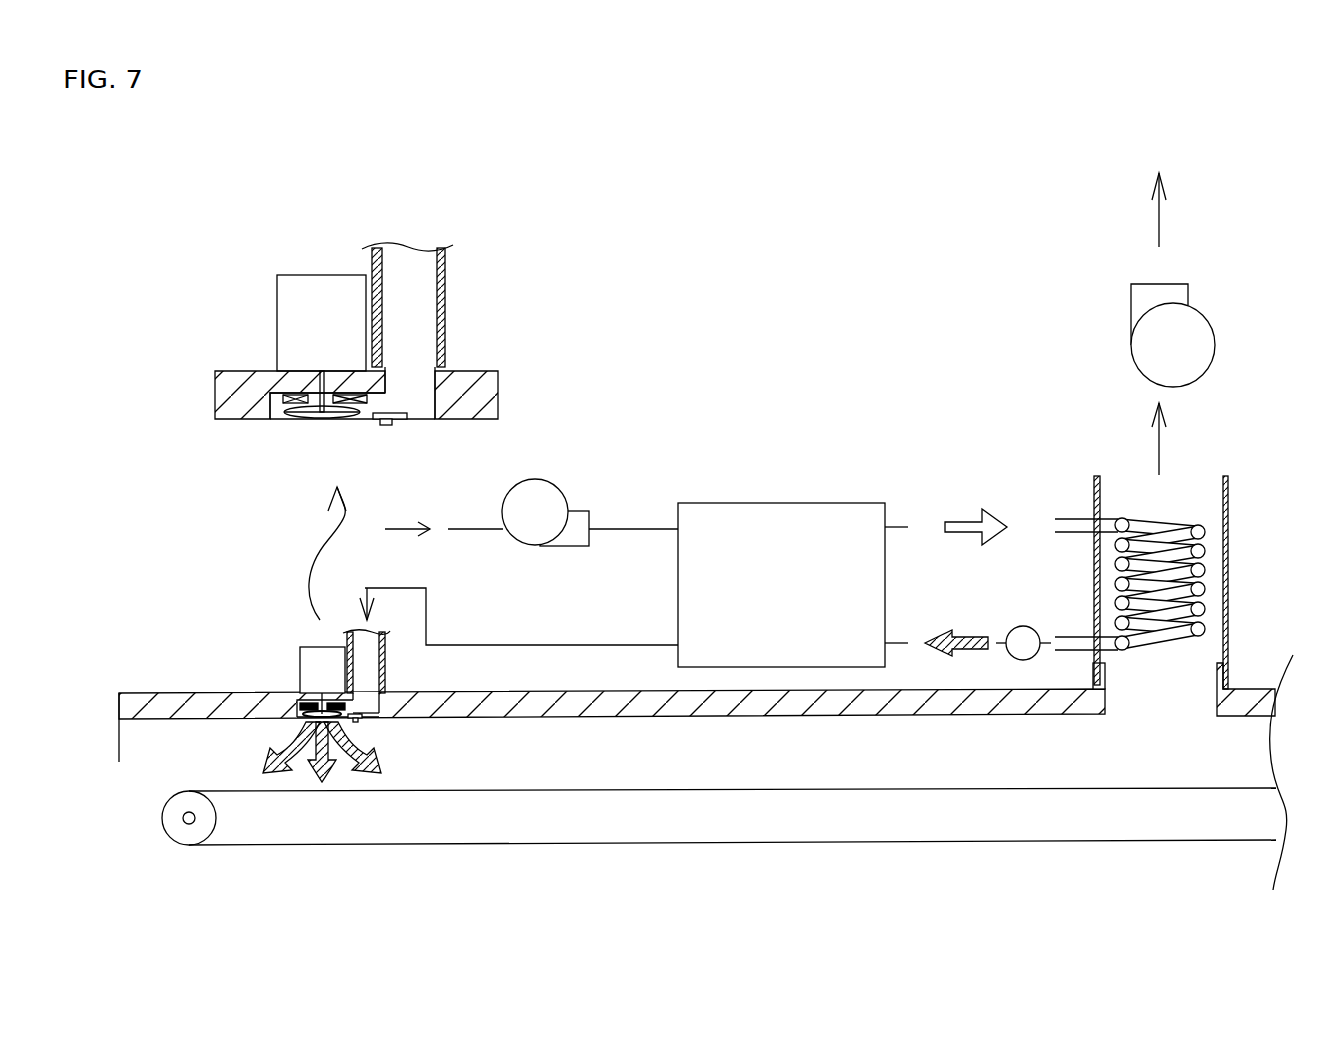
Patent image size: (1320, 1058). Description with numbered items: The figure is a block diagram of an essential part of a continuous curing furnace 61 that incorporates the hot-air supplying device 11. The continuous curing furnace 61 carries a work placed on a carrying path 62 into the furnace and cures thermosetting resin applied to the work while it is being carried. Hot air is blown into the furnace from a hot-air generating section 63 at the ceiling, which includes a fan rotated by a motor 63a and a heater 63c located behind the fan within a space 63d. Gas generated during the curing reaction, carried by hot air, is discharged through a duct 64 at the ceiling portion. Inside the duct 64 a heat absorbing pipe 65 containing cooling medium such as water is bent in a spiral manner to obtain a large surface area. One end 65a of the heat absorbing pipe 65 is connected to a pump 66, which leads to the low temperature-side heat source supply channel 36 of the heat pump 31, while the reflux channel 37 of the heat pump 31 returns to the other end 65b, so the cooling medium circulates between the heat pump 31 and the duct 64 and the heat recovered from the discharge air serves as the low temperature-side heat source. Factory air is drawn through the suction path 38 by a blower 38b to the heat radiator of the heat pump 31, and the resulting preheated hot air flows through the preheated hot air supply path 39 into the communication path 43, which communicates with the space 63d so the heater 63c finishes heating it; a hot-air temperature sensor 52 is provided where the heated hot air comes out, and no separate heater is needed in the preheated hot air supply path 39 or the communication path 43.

The hot-air supplying device 11 is at (911, 372).
The heat pump 31 is at (782, 502).
The low temperature-side heat source supply channel 36 is at (897, 642).
The reflux channel 37 is at (897, 525).
The suction path 38 is at (615, 528).
The blower 38b is at (543, 478).
The preheated hot air supply path 39 is at (445, 298).
The communication path 43 is at (420, 396).
The hot-air temperature sensor 52 is at (388, 425).
The continuous curing furnace 61 is at (1272, 508).
The carrying path 62 is at (808, 790).
The hot-air generating section 63 is at (219, 247).
The motor 63a is at (308, 273).
The heater 63c is at (280, 405).
The space 63d is at (265, 402).
The duct 64 is at (1230, 585).
The heat absorbing pipe 65 is at (1170, 520).
The one end of heat absorbing pipe 65a is at (1075, 635).
The other end of heat absorbing pipe 65b is at (1075, 517).
The pump 66 is at (1023, 630).